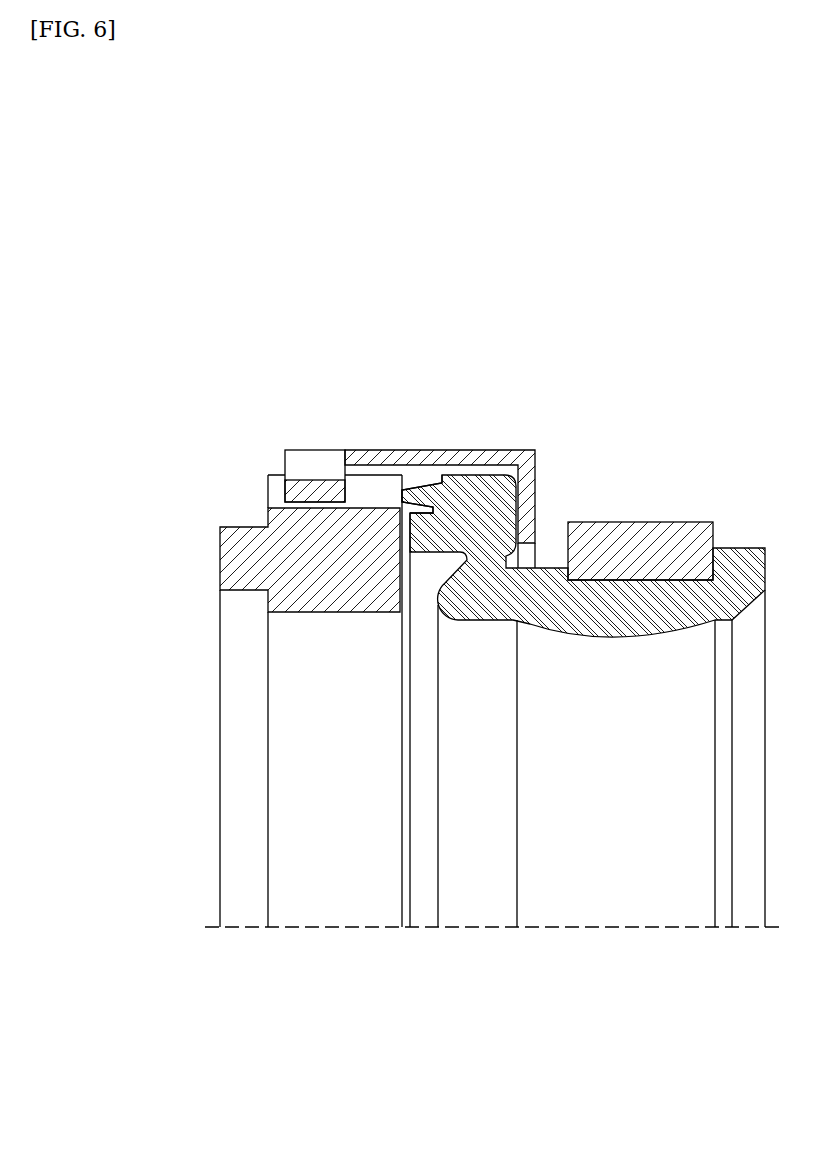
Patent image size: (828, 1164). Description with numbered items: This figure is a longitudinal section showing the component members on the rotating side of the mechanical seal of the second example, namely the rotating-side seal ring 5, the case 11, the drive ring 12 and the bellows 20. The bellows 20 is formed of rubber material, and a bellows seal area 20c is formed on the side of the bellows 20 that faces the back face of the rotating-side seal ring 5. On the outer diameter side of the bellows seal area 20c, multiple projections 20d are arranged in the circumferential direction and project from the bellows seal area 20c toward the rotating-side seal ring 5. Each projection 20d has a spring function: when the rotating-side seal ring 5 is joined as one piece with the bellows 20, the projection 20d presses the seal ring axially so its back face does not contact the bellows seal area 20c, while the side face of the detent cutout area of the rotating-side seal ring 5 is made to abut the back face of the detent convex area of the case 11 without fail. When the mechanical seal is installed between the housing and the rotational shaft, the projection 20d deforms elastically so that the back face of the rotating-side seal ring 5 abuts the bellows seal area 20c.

The rotating-side seal ring 5 is at (265, 555).
The case 11 is at (447, 450).
The drive ring 12 is at (668, 521).
The bellows 20 is at (623, 607).
The bellows seal area 20c is at (405, 540).
The projection 20d is at (413, 493).